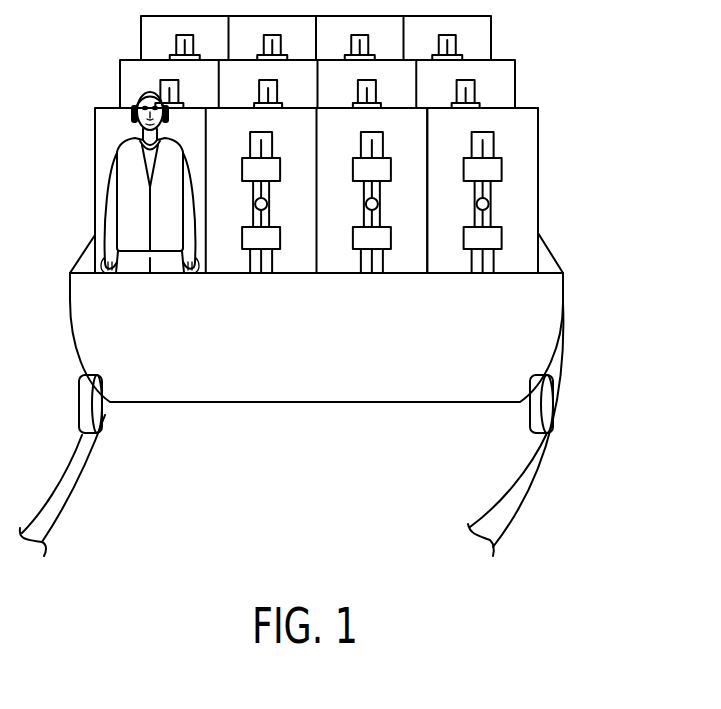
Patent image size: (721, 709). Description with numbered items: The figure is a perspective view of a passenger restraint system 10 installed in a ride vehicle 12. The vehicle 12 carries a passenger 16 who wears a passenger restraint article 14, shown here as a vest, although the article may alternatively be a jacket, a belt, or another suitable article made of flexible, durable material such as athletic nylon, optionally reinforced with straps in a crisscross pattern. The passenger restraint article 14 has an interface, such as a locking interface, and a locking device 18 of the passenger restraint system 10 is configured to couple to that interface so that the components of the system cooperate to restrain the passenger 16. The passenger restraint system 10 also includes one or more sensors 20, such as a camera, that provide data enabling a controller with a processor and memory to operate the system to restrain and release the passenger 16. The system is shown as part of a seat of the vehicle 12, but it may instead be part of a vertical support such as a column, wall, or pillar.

The passenger restraint system 10 is at (349, 173).
The ride vehicle 12 is at (576, 250).
The passenger restraint article 14 is at (135, 187).
The passenger 16 is at (136, 97).
The locking device 18 is at (370, 231).
The sensor 20 is at (367, 207).